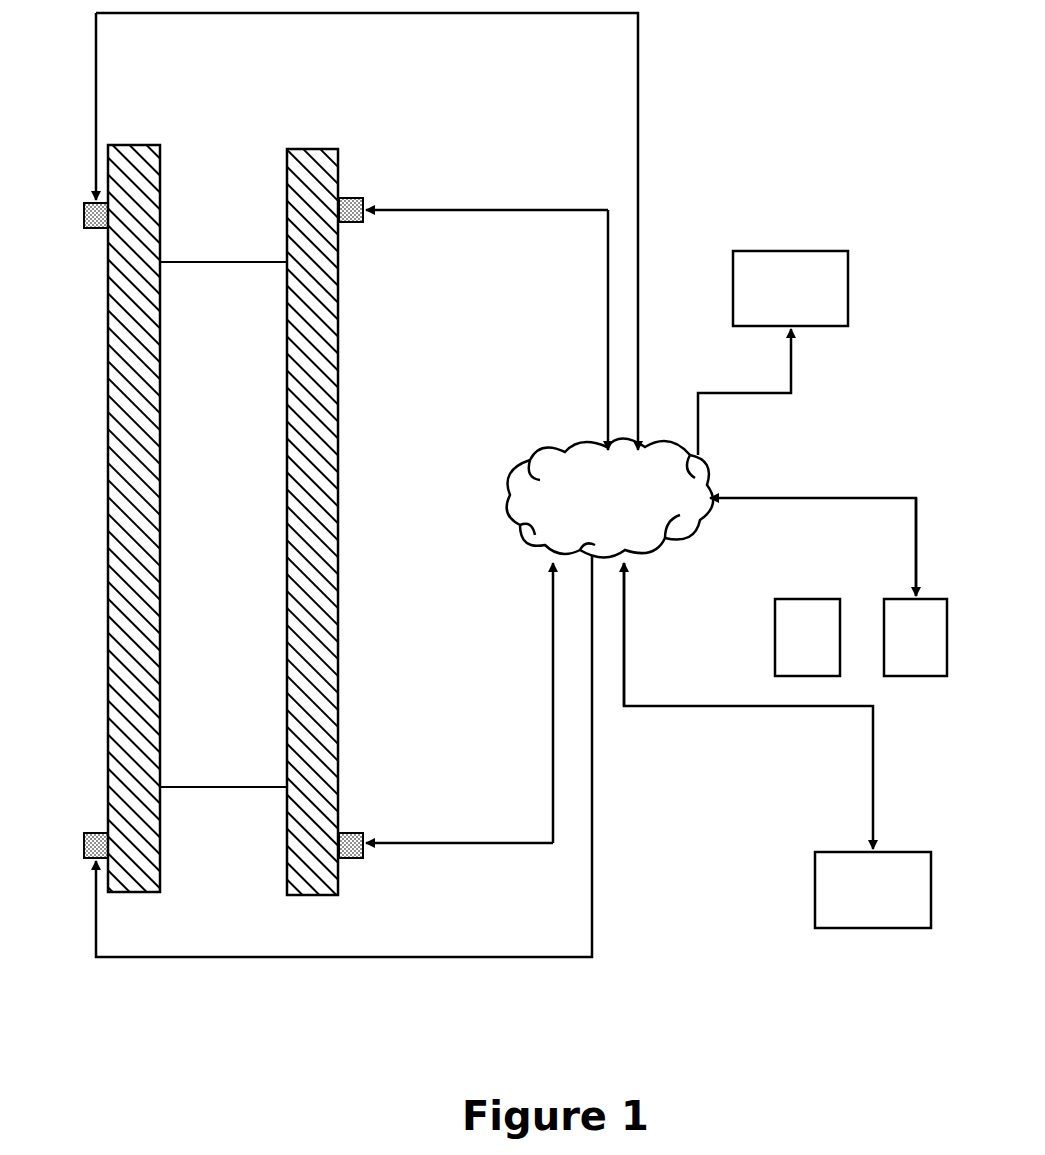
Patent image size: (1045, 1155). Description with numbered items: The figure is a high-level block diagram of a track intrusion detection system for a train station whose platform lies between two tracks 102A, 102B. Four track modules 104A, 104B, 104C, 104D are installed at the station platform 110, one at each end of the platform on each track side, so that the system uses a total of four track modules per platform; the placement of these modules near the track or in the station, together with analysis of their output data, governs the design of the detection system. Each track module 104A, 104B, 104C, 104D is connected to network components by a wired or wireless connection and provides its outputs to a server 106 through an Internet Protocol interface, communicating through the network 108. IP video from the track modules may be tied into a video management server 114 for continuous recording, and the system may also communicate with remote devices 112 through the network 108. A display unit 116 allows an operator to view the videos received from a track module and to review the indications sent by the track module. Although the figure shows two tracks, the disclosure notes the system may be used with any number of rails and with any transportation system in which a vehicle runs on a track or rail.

The track 102A is at (106, 412).
The track 102B is at (340, 412).
The track module 104A is at (82, 214).
The track module 104B is at (82, 845).
The track module 104C is at (366, 200).
The track module 104D is at (366, 836).
The server 106 is at (882, 620).
The network 108 is at (527, 460).
The station platform 110 is at (238, 499).
The remote devices 112 is at (813, 871).
The video management server 114 is at (731, 270).
The display unit 116 is at (773, 619).